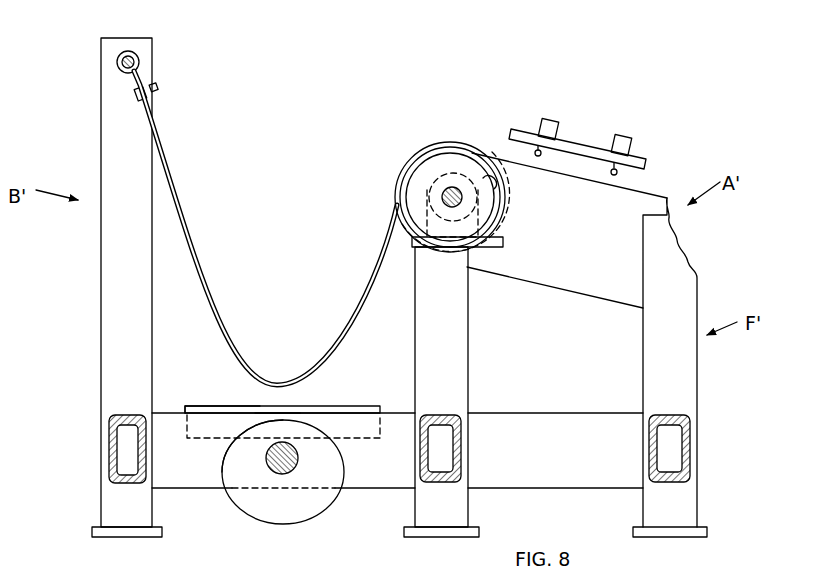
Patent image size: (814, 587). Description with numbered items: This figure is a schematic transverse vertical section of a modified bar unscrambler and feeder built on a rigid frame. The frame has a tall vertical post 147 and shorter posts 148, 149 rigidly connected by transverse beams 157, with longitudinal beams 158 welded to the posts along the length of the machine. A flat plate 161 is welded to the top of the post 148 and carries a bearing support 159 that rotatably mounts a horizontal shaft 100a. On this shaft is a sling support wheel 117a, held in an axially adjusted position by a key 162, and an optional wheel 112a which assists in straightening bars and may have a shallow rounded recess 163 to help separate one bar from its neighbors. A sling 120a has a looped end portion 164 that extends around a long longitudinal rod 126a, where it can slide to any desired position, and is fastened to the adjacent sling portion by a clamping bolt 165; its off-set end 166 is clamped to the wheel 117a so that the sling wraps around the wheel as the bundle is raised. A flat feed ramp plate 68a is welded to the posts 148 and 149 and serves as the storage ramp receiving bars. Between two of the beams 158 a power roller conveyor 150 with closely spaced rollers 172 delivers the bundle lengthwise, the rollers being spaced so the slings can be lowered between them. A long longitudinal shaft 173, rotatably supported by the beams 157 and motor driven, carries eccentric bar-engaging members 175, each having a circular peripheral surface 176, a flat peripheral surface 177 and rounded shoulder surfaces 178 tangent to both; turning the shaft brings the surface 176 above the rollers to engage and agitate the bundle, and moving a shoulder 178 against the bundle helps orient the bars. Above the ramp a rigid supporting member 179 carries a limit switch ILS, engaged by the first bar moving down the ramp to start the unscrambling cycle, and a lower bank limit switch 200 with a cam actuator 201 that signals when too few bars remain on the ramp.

The longitudinal rod 126a is at (124, 50).
The looped end portion 164 is at (122, 78).
The clamping bolt 165 is at (158, 90).
The sling 120a is at (186, 208).
The tall vertical post 147 is at (115, 287).
The shorter post 148 is at (457, 333).
The shorter post 149 is at (655, 357).
The transverse beam 157 is at (215, 488).
The longitudinal beam 158 is at (118, 418).
The power roller conveyor 150 is at (330, 406).
The conveyor roller 172 is at (205, 406).
The flat peripheral surface 177 is at (276, 413).
The rounded shoulder surface 178 is at (245, 432).
The circular peripheral surface 176 is at (300, 520).
The eccentric bar-engaging member 175 is at (237, 461).
The longitudinal shaft 173 is at (272, 468).
The rounded recess 163 is at (422, 150).
The wheel 112a is at (402, 170).
The bearing support 159 is at (512, 200).
The sling support wheel 117a is at (462, 172).
The key 162 is at (447, 196).
The off-set end 166 is at (488, 182).
The horizontal shaft 100a is at (488, 222).
The flat plate 161 is at (413, 263).
The feed ramp plate 68a is at (535, 283).
The rigid supporting member 179 is at (560, 143).
The limit switch ILS is at (547, 118).
The limit switch 200 is at (622, 136).
The cam actuator 201 is at (620, 174).